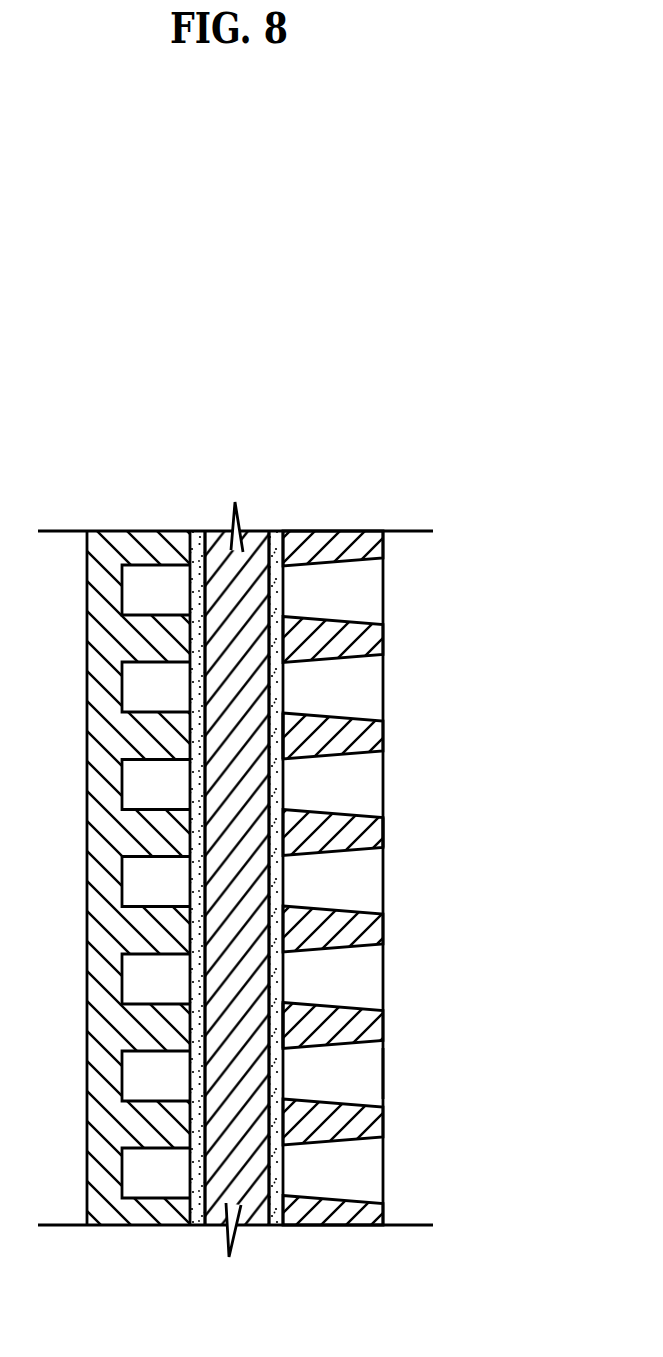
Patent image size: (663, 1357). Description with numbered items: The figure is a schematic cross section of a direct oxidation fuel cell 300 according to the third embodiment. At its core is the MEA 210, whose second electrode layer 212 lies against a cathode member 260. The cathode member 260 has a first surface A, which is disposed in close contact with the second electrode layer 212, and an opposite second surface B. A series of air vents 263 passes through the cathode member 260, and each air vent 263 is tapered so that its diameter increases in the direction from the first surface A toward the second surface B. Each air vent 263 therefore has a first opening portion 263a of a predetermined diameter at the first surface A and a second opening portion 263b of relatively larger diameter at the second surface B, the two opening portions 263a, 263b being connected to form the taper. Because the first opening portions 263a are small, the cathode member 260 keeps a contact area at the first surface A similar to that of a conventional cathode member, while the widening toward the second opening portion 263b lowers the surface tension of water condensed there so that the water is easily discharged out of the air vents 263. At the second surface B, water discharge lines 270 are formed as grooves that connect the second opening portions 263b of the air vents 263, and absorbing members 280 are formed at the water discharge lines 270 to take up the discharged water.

The direct oxidation fuel cell 300 is at (262, 448).
The MEA 210 is at (216, 1231).
The second electrode layer 212 is at (278, 1226).
The cathode member 260 is at (410, 878).
The air vent 263 is at (383, 784).
The first opening portion 263a is at (272, 1000).
The second opening portion 263b is at (384, 1073).
The water discharge line 270 is at (362, 647).
The absorbing member 280 is at (384, 1110).
The first surface A is at (275, 697).
The second surface B is at (384, 828).